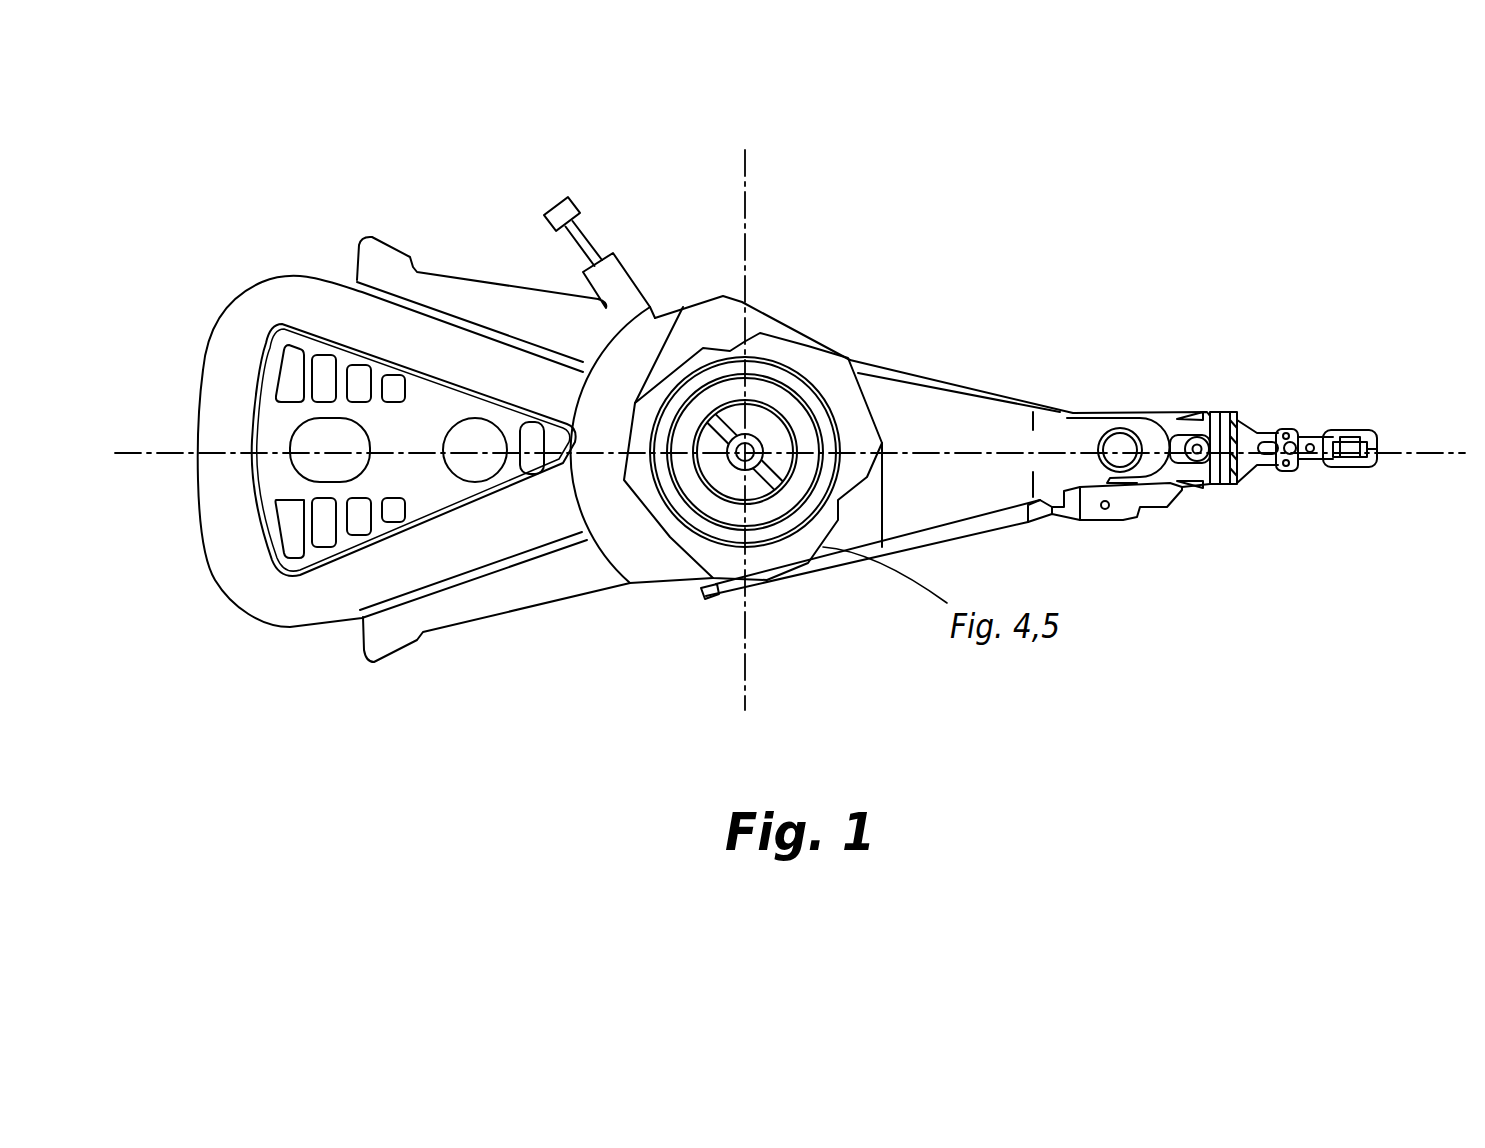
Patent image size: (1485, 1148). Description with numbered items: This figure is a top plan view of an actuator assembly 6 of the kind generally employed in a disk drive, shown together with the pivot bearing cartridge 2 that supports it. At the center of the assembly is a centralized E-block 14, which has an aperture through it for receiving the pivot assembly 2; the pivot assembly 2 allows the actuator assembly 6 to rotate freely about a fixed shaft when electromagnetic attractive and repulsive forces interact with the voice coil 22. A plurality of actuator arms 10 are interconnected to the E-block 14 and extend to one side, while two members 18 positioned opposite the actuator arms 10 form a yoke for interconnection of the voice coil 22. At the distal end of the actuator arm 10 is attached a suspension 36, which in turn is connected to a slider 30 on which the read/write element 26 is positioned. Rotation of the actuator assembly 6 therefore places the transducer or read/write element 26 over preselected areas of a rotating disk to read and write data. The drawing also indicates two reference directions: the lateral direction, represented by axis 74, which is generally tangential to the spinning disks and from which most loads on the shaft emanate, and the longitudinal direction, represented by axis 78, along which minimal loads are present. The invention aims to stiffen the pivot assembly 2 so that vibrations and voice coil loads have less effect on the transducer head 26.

The pivot bearing cartridge 2 is at (750, 436).
The actuator assembly 6 is at (887, 297).
The actuator arms 10 is at (905, 398).
The E-block 14 is at (730, 327).
The members 18 is at (418, 285).
The voice coil 22 is at (257, 305).
The read/write element 26 is at (1360, 447).
The slider 30 is at (1345, 425).
The suspension 36 is at (1266, 408).
The lateral axis 74 is at (747, 632).
The longitudinal axis 78 is at (1412, 448).